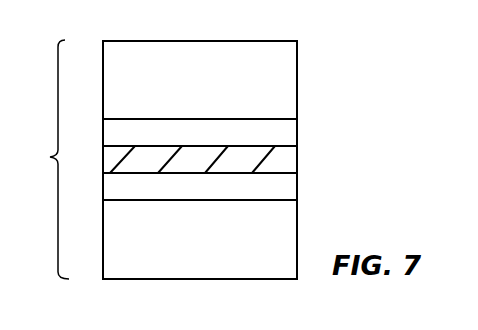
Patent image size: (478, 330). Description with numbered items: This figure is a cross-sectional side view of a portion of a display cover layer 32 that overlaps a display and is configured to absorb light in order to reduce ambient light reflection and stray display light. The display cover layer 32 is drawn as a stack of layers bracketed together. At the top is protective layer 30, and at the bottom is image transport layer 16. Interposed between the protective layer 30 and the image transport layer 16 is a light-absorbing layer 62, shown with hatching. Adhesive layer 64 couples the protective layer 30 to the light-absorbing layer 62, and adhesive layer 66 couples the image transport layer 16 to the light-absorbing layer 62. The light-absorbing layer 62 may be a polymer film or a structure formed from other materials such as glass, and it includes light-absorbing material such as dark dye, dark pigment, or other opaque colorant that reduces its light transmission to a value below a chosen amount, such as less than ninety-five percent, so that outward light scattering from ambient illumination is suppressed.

The image transport layer 16 is at (288, 223).
The protective layer 30 is at (288, 75).
The display cover layer 32 is at (47, 159).
The light-absorbing layer 62 is at (288, 158).
The adhesive layer 64 is at (288, 130).
The adhesive layer 66 is at (288, 188).